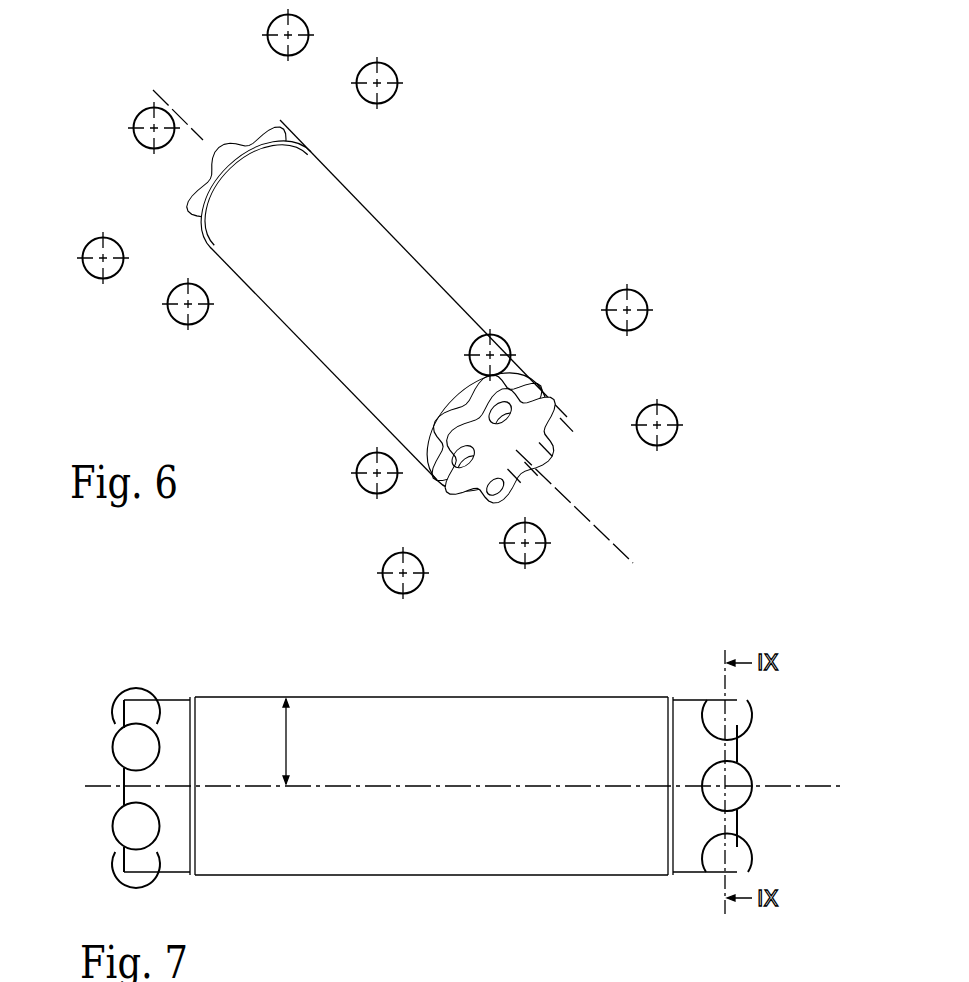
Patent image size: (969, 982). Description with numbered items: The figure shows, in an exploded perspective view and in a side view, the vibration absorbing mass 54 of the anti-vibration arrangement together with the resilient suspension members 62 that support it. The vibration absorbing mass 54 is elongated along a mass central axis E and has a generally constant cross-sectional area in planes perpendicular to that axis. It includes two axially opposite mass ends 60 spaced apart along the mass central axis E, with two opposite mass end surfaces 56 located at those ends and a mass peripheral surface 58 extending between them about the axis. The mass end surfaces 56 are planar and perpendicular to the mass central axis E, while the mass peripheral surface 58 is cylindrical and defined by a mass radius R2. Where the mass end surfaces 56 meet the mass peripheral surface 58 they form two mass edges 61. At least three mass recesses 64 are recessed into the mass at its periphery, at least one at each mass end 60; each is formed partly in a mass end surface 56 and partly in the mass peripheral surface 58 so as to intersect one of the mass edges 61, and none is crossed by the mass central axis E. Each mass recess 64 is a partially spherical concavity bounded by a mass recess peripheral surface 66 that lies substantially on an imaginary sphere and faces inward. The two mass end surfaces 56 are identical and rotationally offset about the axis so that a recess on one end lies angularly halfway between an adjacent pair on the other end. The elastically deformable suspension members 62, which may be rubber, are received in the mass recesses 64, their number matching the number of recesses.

In FIG. 6, the vibration absorbing mass 54 is at (459, 218).
In FIG. 7, the vibration absorbing mass 54 is at (556, 713).
In FIG. 6, the mass end surfaces 56 is at (225, 122).
In FIG. 7, the mass end surfaces 56 is at (123, 777).
In FIG. 6, the mass peripheral surface 58 is at (362, 240).
In FIG. 7, the mass peripheral surface 58 is at (488, 723).
In FIG. 7, the mass ends 60 is at (88, 808).
In FIG. 6, the mass edges 61 is at (177, 182).
In FIG. 7, the mass edges 61 is at (123, 862).
In FIG. 6, the suspension members 62 is at (300, 26).
In FIG. 6, the mass recesses 64 is at (460, 462).
In FIG. 6, the mass recess peripheral surface 66 is at (512, 405).
In FIG. 6, the mass central axis E is at (614, 545).
In FIG. 7, the mass central axis E is at (803, 785).
In FIG. 7, the mass radius R2 is at (288, 722).